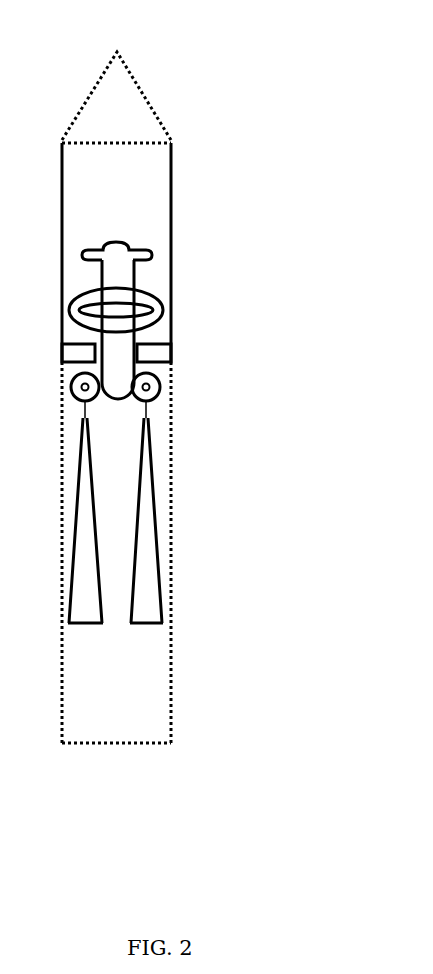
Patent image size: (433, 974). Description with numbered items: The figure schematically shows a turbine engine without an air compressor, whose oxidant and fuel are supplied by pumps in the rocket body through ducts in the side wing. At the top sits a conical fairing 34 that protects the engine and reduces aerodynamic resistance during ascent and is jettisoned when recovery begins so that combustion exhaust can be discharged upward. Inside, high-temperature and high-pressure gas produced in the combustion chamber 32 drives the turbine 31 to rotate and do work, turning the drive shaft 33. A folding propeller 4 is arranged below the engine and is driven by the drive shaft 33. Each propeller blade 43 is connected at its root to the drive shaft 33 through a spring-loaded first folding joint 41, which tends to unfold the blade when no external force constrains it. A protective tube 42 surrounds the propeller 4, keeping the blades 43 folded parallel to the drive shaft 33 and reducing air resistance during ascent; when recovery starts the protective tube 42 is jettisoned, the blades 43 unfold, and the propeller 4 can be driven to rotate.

The fairing 34 is at (116, 79).
The protective tube 42 is at (177, 543).
The turbine 31 is at (117, 235).
The drive shaft 33 is at (137, 275).
The combustion chamber 32 is at (147, 297).
The first folding joint 41 is at (160, 387).
The propeller 4 is at (115, 520).
The propeller blade 43 is at (157, 618).